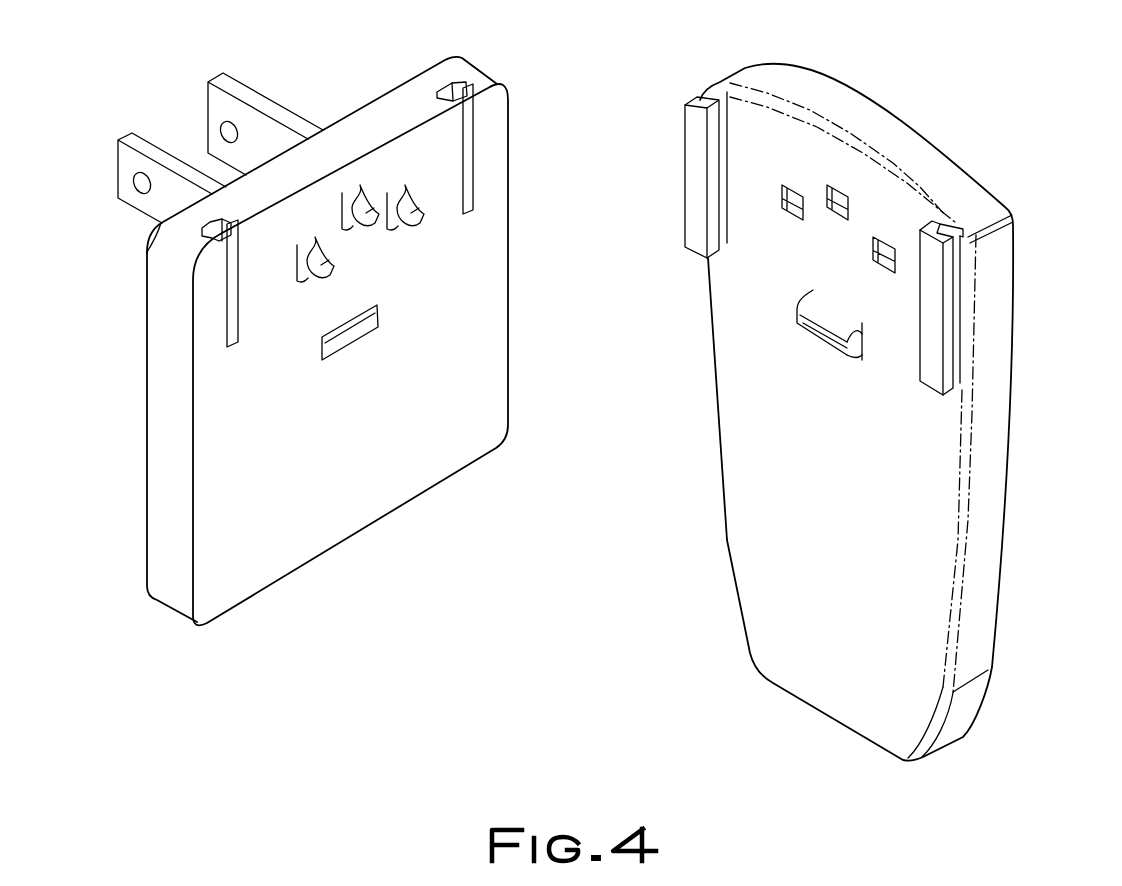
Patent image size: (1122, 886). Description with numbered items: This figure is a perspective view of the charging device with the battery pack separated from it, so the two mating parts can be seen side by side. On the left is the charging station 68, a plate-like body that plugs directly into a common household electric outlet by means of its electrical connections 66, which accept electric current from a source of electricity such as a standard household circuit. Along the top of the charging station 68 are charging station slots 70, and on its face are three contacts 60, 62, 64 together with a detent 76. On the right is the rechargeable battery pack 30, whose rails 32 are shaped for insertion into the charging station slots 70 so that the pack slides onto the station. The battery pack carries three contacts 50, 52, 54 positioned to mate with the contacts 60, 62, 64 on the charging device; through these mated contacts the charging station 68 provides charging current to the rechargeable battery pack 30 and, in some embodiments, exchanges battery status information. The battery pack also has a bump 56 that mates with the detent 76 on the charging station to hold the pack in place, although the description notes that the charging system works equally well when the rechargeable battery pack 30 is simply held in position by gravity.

The rechargeable battery pack 30 is at (790, 612).
The rails 32 is at (697, 128).
The contact 50 is at (784, 200).
The contact 52 is at (839, 206).
The contact 54 is at (872, 253).
The bump 56 is at (862, 347).
The contact 60 is at (296, 272).
The contact 62 is at (348, 230).
The contact 64 is at (392, 230).
The electrical connections 66 is at (215, 101).
The charging station 68 is at (170, 477).
The charging station slots 70 is at (456, 74).
The detent 76 is at (362, 332).